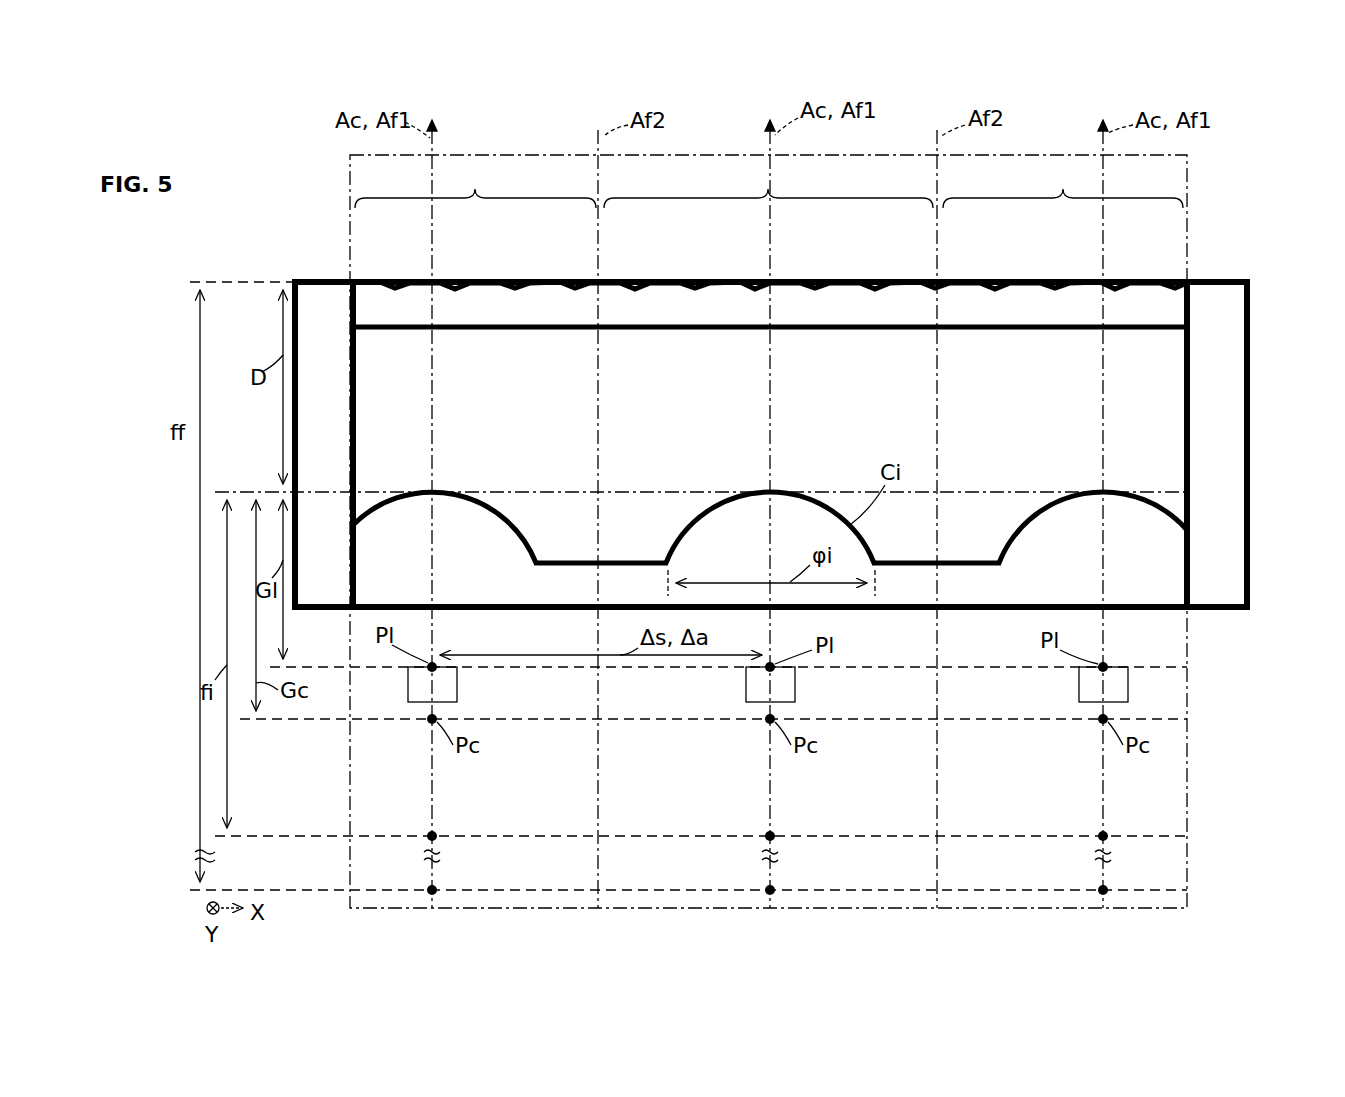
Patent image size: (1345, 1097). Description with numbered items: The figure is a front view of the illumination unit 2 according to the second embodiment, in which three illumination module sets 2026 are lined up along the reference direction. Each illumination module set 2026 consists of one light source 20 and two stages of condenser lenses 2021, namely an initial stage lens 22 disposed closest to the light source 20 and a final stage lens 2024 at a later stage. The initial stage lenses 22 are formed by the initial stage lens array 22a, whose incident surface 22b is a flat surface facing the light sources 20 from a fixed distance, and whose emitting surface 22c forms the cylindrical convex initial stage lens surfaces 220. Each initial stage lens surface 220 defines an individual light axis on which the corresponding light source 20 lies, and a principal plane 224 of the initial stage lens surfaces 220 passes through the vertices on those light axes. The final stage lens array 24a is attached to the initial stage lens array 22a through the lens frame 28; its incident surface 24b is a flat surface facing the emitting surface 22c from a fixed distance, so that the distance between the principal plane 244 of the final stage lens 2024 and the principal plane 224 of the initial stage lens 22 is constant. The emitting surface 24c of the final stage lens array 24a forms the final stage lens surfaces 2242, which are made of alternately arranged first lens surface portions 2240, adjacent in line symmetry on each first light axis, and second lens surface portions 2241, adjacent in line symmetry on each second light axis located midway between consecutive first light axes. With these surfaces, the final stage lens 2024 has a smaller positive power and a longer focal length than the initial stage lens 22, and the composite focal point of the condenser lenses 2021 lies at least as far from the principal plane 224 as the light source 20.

The illumination unit 2 is at (1230, 184).
The light source 20 is at (408, 685).
The initial stage lens 22 is at (812, 445).
The initial stage lens array 22a is at (1170, 578).
The incident surface 22b is at (1135, 610).
The emitting surface 22c is at (680, 535).
The final stage lens array 24a is at (1163, 310).
The incident surface 24b is at (1135, 330).
The emitting surface 24c is at (1190, 282).
The lens frame 28 is at (1225, 520).
The initial stage lens surface 220 is at (508, 497).
The principal plane 224 is at (372, 490).
The principal plane 244 is at (365, 280).
The condenser lenses 2021 is at (445, 290).
The final stage lens 2024 is at (813, 373).
The illumination module set 2026 is at (347, 167).
The first lens surface portion 2240 is at (1145, 280).
The second lens surface portion 2241 is at (395, 284).
The final stage lens surface 2242 is at (769, 185).